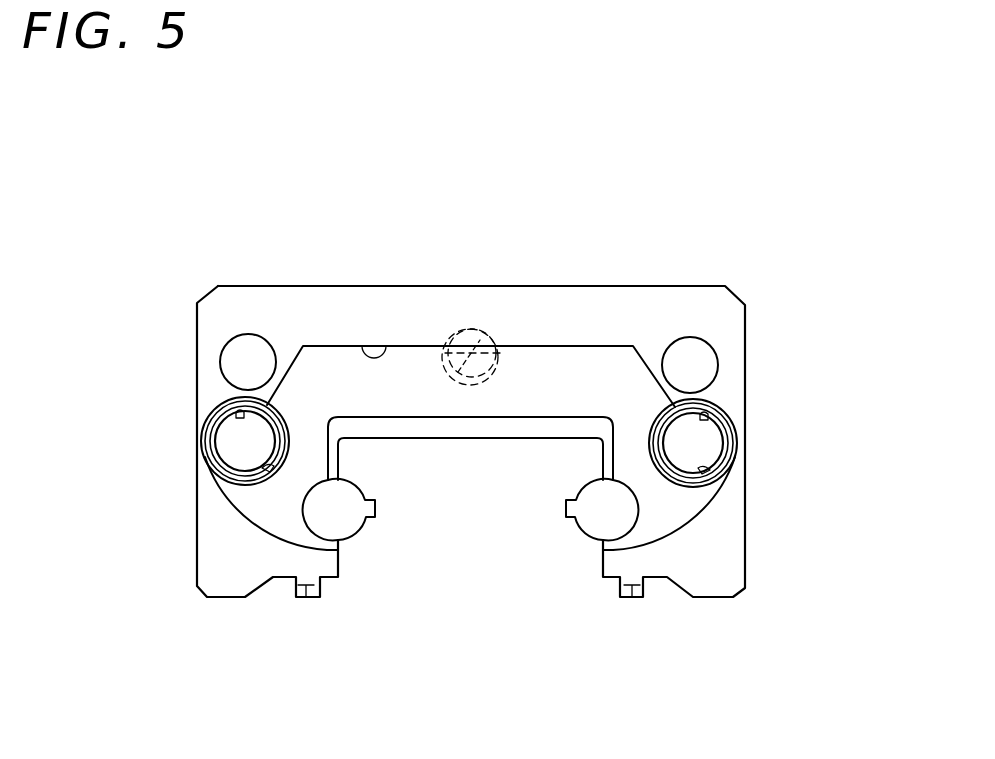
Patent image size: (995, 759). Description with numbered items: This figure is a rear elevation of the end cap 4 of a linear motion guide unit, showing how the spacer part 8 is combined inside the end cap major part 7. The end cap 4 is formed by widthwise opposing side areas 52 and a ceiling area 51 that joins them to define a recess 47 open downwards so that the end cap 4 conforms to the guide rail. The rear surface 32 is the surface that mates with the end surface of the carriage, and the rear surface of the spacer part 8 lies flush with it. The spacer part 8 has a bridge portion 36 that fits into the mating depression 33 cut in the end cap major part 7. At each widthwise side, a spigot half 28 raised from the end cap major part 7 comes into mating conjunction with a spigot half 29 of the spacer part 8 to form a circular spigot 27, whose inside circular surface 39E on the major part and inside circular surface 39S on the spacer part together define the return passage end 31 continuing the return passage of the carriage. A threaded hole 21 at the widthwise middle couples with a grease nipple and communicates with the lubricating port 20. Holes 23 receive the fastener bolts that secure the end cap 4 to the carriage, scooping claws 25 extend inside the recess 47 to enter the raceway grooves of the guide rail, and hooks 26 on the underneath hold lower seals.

The end cap 4 is at (627, 285).
The end cap major part 7 is at (676, 310).
The spacer part 8 is at (535, 398).
The lubricating port 20 is at (483, 330).
The threaded hole 21 is at (455, 333).
The hole 23 is at (250, 355).
The scooping claw 25 is at (357, 520).
The hook 26 is at (305, 597).
The spigot 27 is at (222, 482).
The spigot half 28 is at (230, 437).
The spigot half 29 is at (238, 478).
The return passage end 31 is at (213, 455).
The rear surface 32 is at (320, 308).
The mating depression 33 is at (362, 343).
The bridge portion 36 is at (573, 380).
The inside circular surface 39E is at (223, 402).
The inside circular surface 39S is at (258, 468).
The recess 47 is at (437, 440).
The ceiling area 51 is at (553, 317).
The side area 52 is at (708, 522).